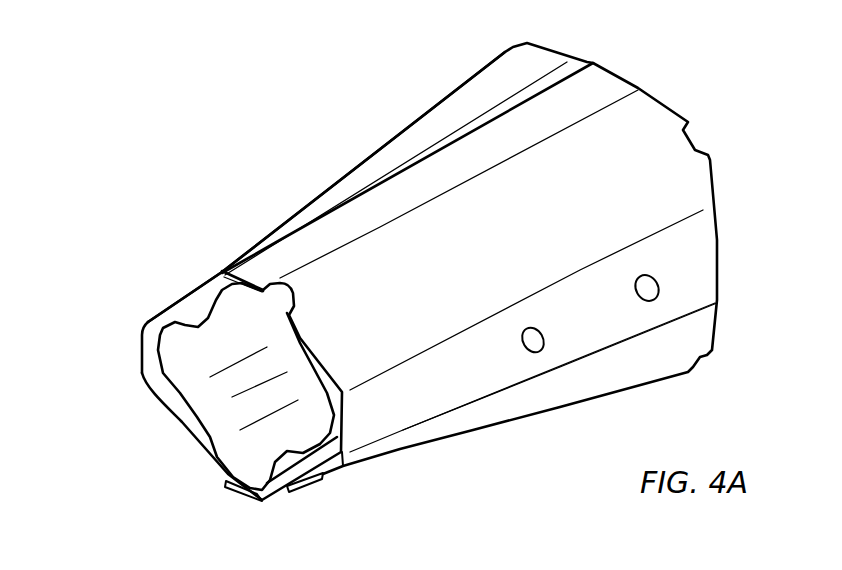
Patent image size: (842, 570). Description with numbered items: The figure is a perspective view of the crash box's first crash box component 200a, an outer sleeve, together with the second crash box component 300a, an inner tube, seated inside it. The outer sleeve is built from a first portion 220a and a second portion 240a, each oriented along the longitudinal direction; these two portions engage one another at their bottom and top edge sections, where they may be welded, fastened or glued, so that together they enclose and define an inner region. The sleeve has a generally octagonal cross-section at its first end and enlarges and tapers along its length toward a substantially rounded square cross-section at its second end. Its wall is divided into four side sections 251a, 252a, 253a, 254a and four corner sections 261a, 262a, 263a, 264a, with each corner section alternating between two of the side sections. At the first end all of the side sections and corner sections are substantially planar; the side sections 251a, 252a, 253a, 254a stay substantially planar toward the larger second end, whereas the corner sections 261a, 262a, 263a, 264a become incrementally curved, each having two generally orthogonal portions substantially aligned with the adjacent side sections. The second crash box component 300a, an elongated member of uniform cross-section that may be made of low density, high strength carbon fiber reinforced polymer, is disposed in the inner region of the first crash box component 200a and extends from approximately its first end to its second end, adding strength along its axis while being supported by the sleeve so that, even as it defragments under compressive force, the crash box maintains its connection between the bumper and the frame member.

The first crash box component 200a is at (653, 96).
The first portion 220a is at (672, 187).
The second portion 240a is at (438, 120).
The corner section 262a is at (423, 265).
The side section 253a is at (312, 238).
The side section 252a is at (445, 387).
The corner section 263a is at (183, 300).
The side section 254a is at (140, 353).
The corner section 264a is at (163, 408).
The second crash box component 300a is at (200, 410).
The side section 251a is at (242, 497).
The corner section 261a is at (320, 477).